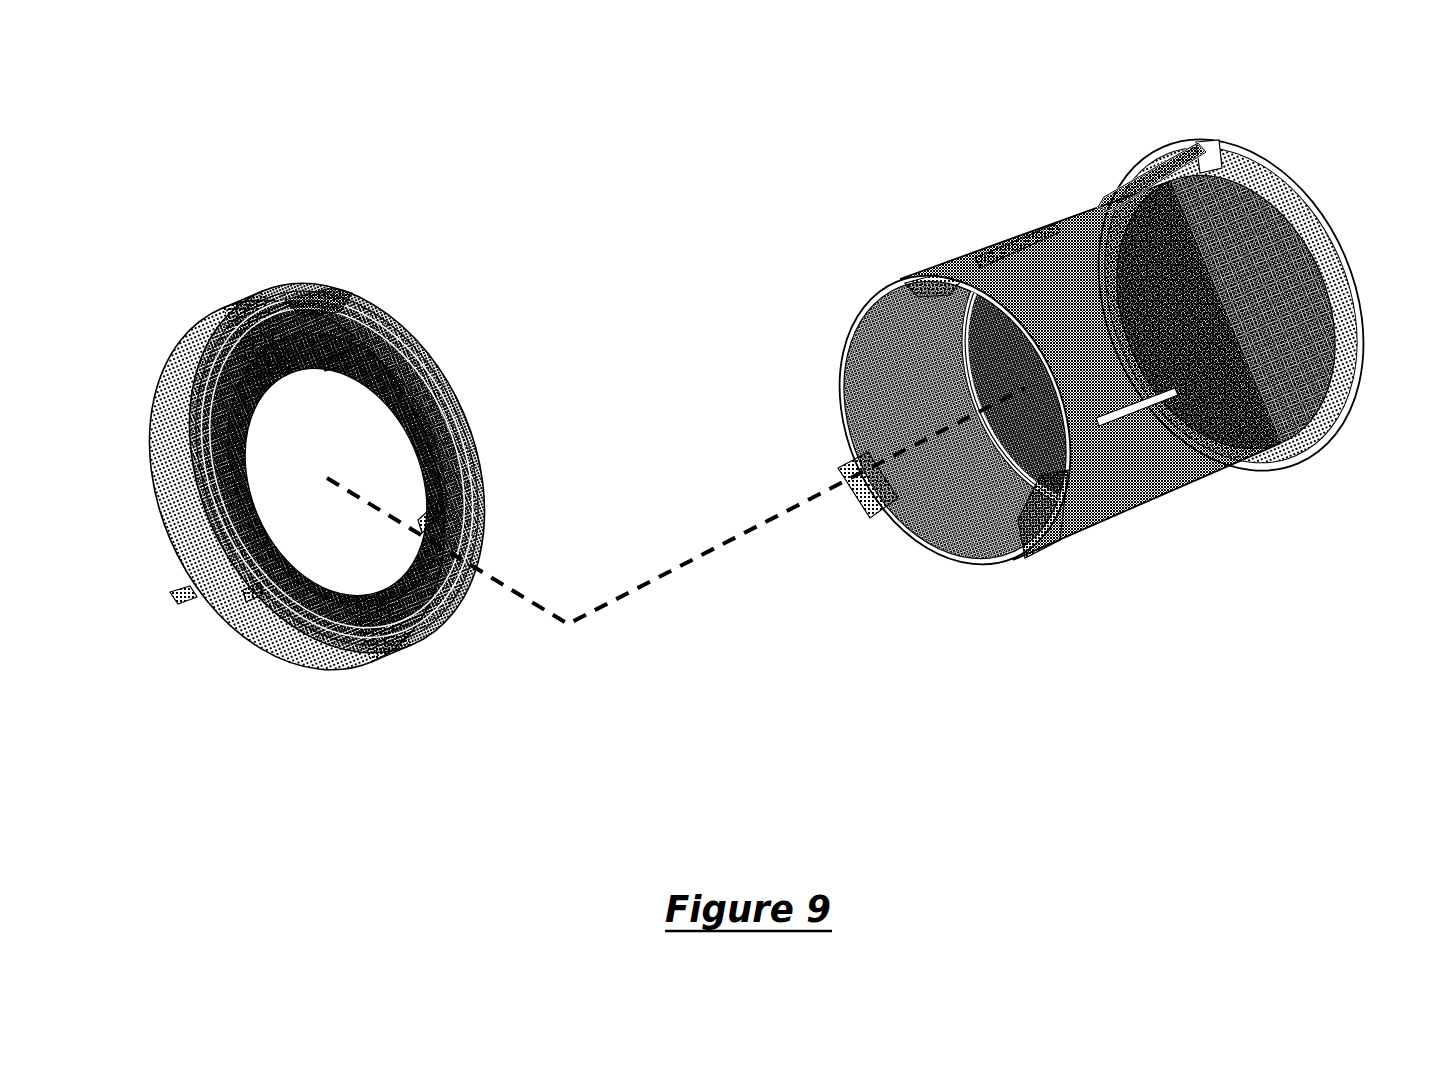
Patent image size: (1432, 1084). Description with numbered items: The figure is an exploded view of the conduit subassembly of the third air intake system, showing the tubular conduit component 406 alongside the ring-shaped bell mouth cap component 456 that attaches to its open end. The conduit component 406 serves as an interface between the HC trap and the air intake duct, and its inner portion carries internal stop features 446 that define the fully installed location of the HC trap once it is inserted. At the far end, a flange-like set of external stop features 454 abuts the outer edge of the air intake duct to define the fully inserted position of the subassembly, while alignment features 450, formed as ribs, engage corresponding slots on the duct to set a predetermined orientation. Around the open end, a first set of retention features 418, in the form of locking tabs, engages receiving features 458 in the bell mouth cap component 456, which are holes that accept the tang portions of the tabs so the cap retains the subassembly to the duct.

The conduit component 406 is at (1248, 406).
The first set of retention features 418 is at (912, 287).
The internal stop features 446 is at (968, 372).
The alignment features 450 is at (1045, 231).
The external stop features 454 is at (1257, 152).
The bell mouth cap component 456 is at (155, 482).
The receiving feature 458 is at (340, 365).